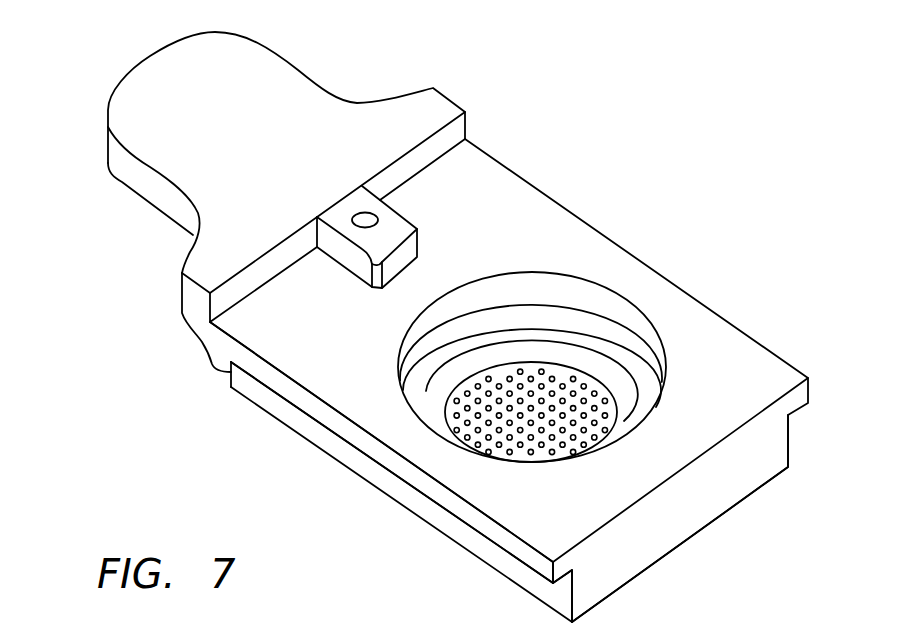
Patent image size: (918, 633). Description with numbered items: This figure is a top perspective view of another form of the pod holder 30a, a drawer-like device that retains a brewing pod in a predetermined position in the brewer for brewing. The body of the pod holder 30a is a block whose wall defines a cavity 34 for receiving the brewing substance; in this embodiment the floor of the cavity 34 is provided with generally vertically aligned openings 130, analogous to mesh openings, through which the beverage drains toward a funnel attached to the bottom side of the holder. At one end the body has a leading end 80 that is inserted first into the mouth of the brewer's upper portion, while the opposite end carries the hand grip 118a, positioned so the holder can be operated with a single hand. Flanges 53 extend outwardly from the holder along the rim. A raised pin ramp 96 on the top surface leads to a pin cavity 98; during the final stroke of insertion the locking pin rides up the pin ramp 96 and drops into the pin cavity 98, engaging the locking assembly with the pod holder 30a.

The pod holder 30a is at (210, 410).
The hand grip 118a is at (139, 222).
The pin ramp 96 is at (395, 235).
The pin cavity 98 is at (365, 212).
The cavity 34 is at (560, 318).
The openings 130 is at (574, 376).
The flanges 53 is at (433, 499).
The leading end 80 is at (706, 510).